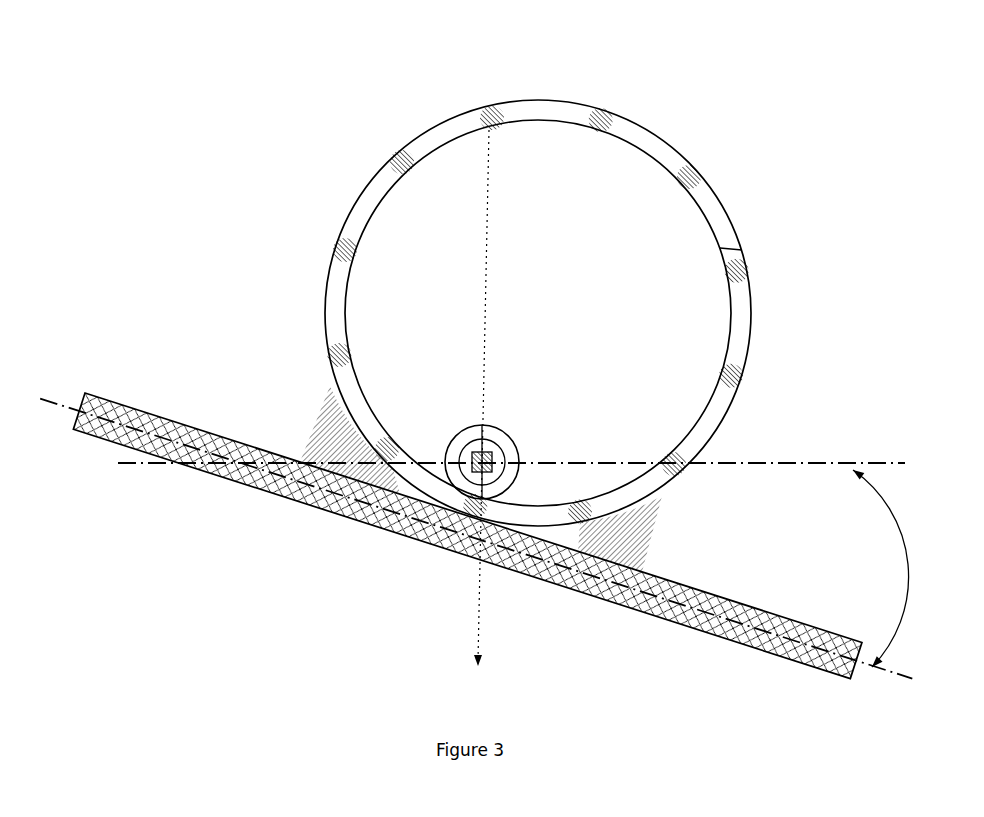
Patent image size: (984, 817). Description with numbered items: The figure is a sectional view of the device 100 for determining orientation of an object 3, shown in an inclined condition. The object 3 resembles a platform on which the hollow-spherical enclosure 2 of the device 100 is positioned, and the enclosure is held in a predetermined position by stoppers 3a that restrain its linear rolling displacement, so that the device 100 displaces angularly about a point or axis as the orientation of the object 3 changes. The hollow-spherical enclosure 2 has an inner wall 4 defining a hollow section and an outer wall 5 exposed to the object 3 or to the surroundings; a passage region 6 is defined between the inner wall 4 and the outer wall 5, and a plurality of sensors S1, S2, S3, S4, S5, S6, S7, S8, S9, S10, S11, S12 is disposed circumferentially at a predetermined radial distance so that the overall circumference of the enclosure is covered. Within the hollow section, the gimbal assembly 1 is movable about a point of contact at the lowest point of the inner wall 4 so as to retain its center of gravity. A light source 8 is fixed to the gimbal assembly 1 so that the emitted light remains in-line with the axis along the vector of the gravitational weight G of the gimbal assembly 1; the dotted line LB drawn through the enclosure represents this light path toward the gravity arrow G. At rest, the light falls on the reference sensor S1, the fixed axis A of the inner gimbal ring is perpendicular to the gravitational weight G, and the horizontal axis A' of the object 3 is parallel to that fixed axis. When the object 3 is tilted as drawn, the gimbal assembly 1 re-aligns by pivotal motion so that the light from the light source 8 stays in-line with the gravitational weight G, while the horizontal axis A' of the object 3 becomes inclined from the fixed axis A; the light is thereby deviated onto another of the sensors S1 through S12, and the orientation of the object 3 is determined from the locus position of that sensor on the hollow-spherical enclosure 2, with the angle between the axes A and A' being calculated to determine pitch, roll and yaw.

The device 100 is at (215, 132).
The gimbal assembly 1 is at (424, 488).
The hollow-spherical enclosure 2 is at (408, 138).
The object 3 is at (806, 664).
The stoppers 3a is at (322, 435).
The inner wall 4 is at (722, 247).
The outer wall 5 is at (718, 195).
The passage region 6 is at (368, 207).
The light source 8 is at (505, 492).
The sensor S1 is at (606, 124).
The sensor S2 is at (694, 178).
The sensor S3 is at (747, 269).
The sensor S4 is at (743, 377).
The sensor S5 is at (692, 464).
The sensor S6 is at (594, 514).
The sensor S7 is at (468, 508).
The sensor S8 is at (378, 452).
The sensor S9 is at (332, 354).
The sensor S10 is at (336, 251).
The sensor S11 is at (392, 160).
The sensor S12 is at (500, 113).
The load bearing line LB is at (486, 172).
The gravitational weight G is at (484, 670).
The fixed axis A is at (509, 466).
The horizontal axis A' is at (476, 546).